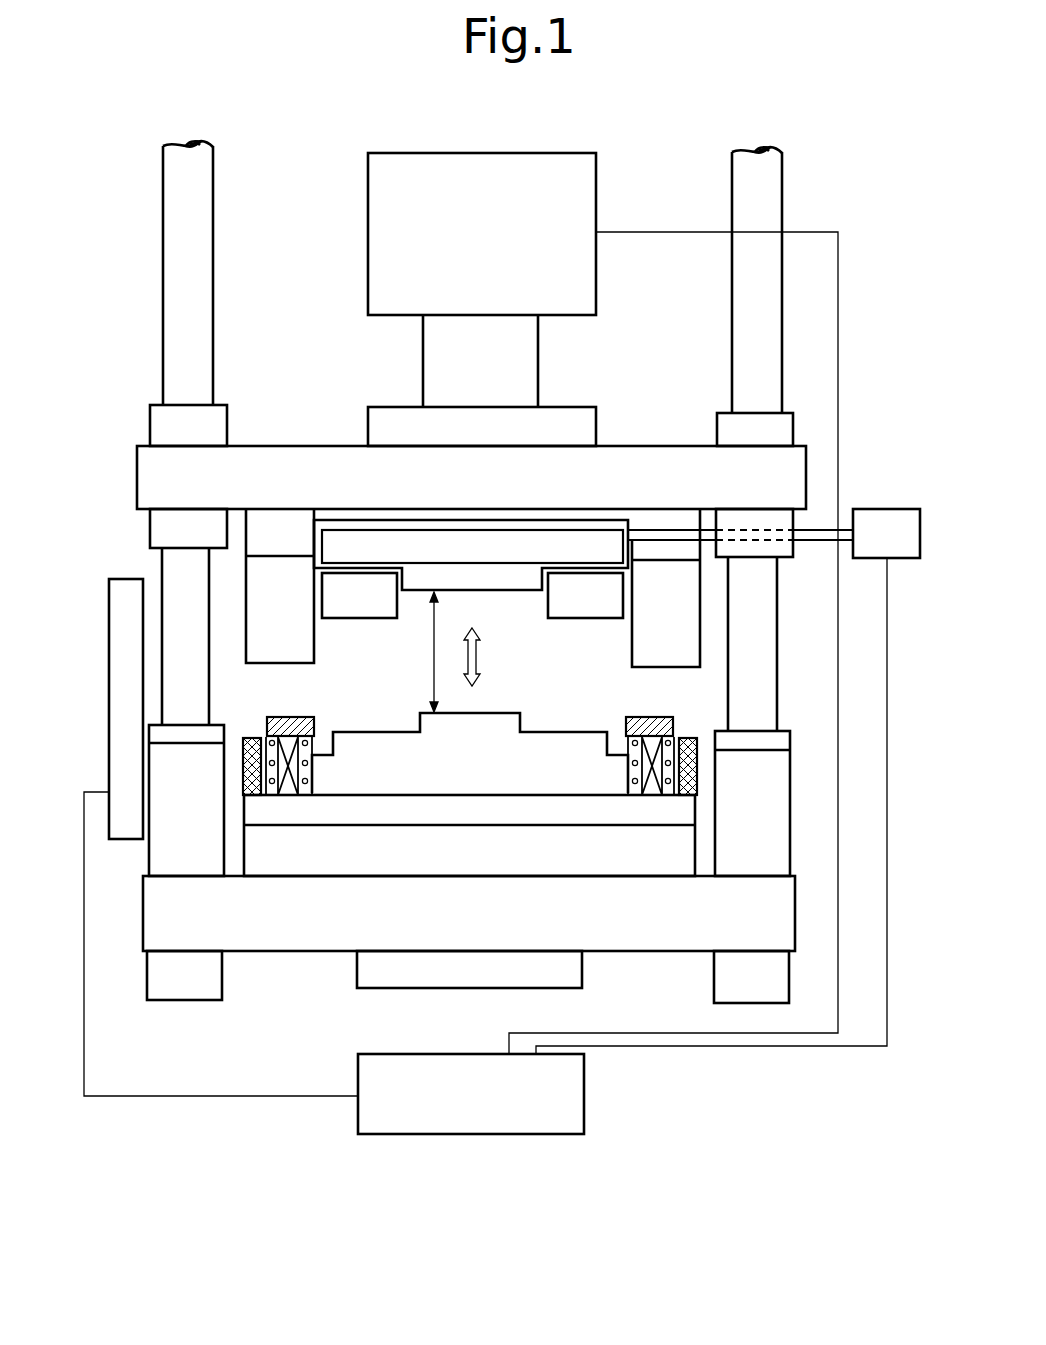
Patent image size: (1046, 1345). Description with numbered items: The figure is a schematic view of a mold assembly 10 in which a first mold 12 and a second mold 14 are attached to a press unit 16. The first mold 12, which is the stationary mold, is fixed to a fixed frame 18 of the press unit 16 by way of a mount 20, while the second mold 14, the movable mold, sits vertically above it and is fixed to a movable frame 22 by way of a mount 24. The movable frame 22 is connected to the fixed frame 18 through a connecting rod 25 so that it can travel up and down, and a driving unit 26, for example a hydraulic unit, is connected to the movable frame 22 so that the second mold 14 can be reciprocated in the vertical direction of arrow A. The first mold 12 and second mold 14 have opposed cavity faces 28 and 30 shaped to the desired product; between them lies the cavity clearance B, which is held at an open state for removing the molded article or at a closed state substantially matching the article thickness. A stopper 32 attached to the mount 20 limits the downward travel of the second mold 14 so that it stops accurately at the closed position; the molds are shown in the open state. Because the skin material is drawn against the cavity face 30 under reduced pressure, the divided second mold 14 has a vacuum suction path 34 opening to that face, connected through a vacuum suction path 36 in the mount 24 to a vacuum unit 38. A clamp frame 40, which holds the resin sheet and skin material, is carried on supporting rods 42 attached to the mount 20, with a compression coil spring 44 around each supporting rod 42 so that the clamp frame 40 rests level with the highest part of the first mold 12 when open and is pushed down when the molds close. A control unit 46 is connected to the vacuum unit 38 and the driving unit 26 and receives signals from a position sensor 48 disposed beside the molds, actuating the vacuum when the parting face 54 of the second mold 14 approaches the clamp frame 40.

The mold assembly 10 is at (763, 116).
The first mold 12 is at (632, 752).
The second mold 14 is at (630, 645).
The press unit 16 is at (156, 204).
The fixed frame 18 is at (125, 900).
The mount 20 is at (383, 806).
The movable frame 22 is at (137, 468).
The mount 24 is at (286, 525).
The connecting rod 25 is at (772, 338).
The driving unit 26 is at (368, 265).
The cavity face 28 is at (383, 730).
The cavity face 30 is at (352, 620).
The stopper 32 is at (240, 760).
The vacuum suction path 34 is at (362, 567).
The vacuum suction path 36 is at (473, 522).
The vacuum unit 38 is at (877, 506).
The clamp frame 40 is at (302, 717).
The supporting rod 42 is at (281, 735).
The compression coil spring 44 is at (270, 794).
The control unit 46 is at (468, 1134).
The position sensor 48 is at (119, 696).
The parting face 54 is at (645, 664).
The direction of arrow A is at (482, 656).
The cavity clearance B is at (432, 642).